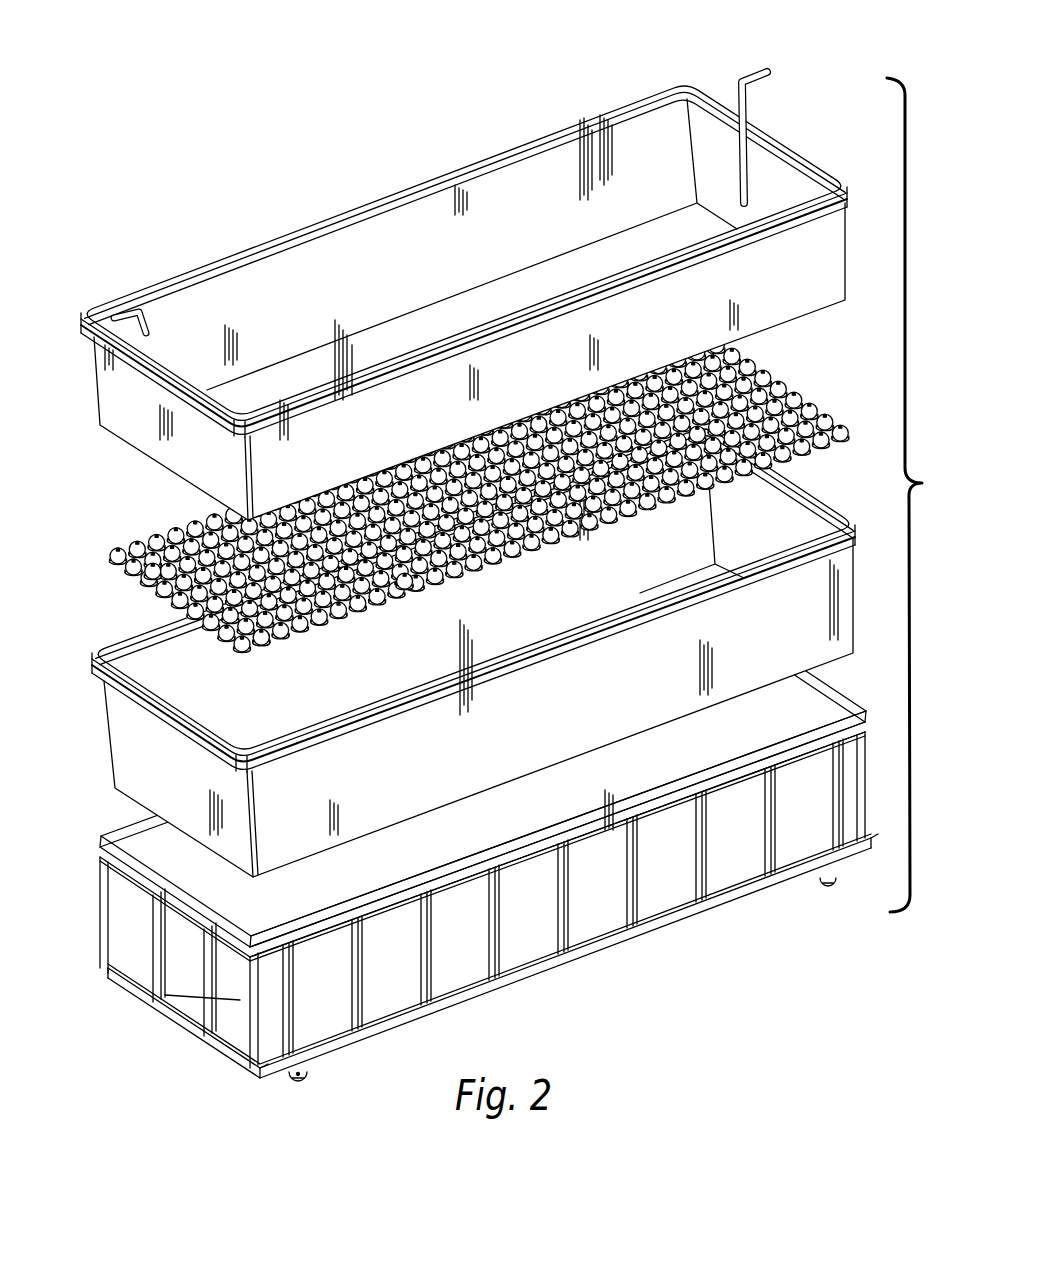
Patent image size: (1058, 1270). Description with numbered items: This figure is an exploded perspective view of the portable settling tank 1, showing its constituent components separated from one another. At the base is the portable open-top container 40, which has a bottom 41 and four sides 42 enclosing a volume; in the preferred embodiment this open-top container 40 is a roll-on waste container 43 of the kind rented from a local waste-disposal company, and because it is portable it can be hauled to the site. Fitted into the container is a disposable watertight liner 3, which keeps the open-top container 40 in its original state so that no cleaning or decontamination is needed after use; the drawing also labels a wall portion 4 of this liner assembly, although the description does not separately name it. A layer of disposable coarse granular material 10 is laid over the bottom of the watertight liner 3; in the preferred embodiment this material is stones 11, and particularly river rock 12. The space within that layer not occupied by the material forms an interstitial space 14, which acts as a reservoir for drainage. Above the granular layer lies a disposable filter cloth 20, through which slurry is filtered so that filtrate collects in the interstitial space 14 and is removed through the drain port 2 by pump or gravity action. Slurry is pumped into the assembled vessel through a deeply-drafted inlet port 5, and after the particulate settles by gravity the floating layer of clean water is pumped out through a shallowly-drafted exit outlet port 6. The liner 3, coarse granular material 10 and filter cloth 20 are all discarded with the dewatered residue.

The settling tank 1 is at (322, 131).
The drain port 2 is at (178, 822).
The watertight liner 3 is at (115, 700).
The container wall 4 is at (128, 770).
The inlet port 5 is at (746, 72).
The exit outlet port 6 is at (135, 305).
The coarse granular material 10 is at (134, 533).
The stones 11 is at (262, 647).
The river rock 12 is at (410, 580).
The interstitial space 14 is at (150, 575).
The filter cloth 20 is at (120, 410).
The open-top container 40 is at (832, 886).
The bottom 41 is at (680, 775).
The sides 42 is at (215, 887).
The roll-on waste container 43 is at (667, 898).